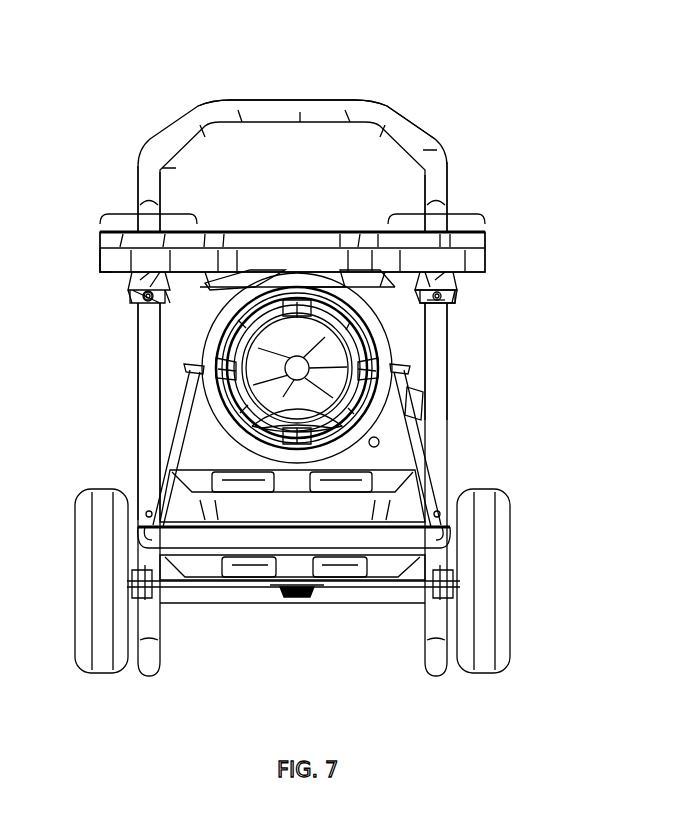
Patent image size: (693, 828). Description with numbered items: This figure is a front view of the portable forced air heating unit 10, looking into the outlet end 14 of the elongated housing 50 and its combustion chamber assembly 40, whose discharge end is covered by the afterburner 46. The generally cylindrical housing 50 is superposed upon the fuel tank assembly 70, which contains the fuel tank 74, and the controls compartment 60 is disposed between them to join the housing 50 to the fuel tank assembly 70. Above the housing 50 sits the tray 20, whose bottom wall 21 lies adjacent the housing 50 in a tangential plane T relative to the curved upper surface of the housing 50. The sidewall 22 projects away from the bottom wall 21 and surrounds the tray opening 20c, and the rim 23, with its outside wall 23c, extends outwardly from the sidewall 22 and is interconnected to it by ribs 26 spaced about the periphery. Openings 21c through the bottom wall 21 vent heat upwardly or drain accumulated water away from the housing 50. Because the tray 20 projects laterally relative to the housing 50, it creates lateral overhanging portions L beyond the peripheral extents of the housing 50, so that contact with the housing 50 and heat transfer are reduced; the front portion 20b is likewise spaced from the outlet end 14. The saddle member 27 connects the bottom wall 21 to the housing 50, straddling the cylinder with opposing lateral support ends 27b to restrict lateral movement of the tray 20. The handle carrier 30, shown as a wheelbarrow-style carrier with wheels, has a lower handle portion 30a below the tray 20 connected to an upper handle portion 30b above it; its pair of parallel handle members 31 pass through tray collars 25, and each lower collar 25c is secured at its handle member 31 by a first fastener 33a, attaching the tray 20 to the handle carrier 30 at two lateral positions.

The portable forced air heating unit 10 is at (581, 116).
The outlet end 14 is at (297, 447).
The tray 20 is at (486, 284).
The front portion 20b is at (500, 292).
The tray opening 20c is at (293, 220).
The bottom wall 21 is at (333, 268).
The openings 21c is at (230, 288).
The sidewall 22 is at (162, 318).
The rim 23 is at (96, 240).
The outside wall 23c is at (110, 250).
The tray collar 25 is at (130, 318).
The lower collar 25c is at (438, 302).
The ribs 26 is at (127, 301).
The saddle member 27 is at (386, 318).
The lateral support ends 27b is at (216, 301).
The handle carrier 30 is at (355, 73).
The lower handle portion 30a is at (462, 470).
The upper handle portion 30b is at (390, 96).
The handle members 31 is at (138, 378).
The first fastener 33a is at (447, 340).
The combustion chamber assembly 40 is at (384, 580).
The afterburner 46 is at (186, 402).
The elongated housing 50 is at (378, 422).
The controls compartment 60 is at (165, 456).
The fuel tank assembly 70 is at (182, 600).
The fuel tank 74 is at (207, 572).
The lateral overhanging portions L is at (152, 200).
The tangential plane T is at (555, 258).